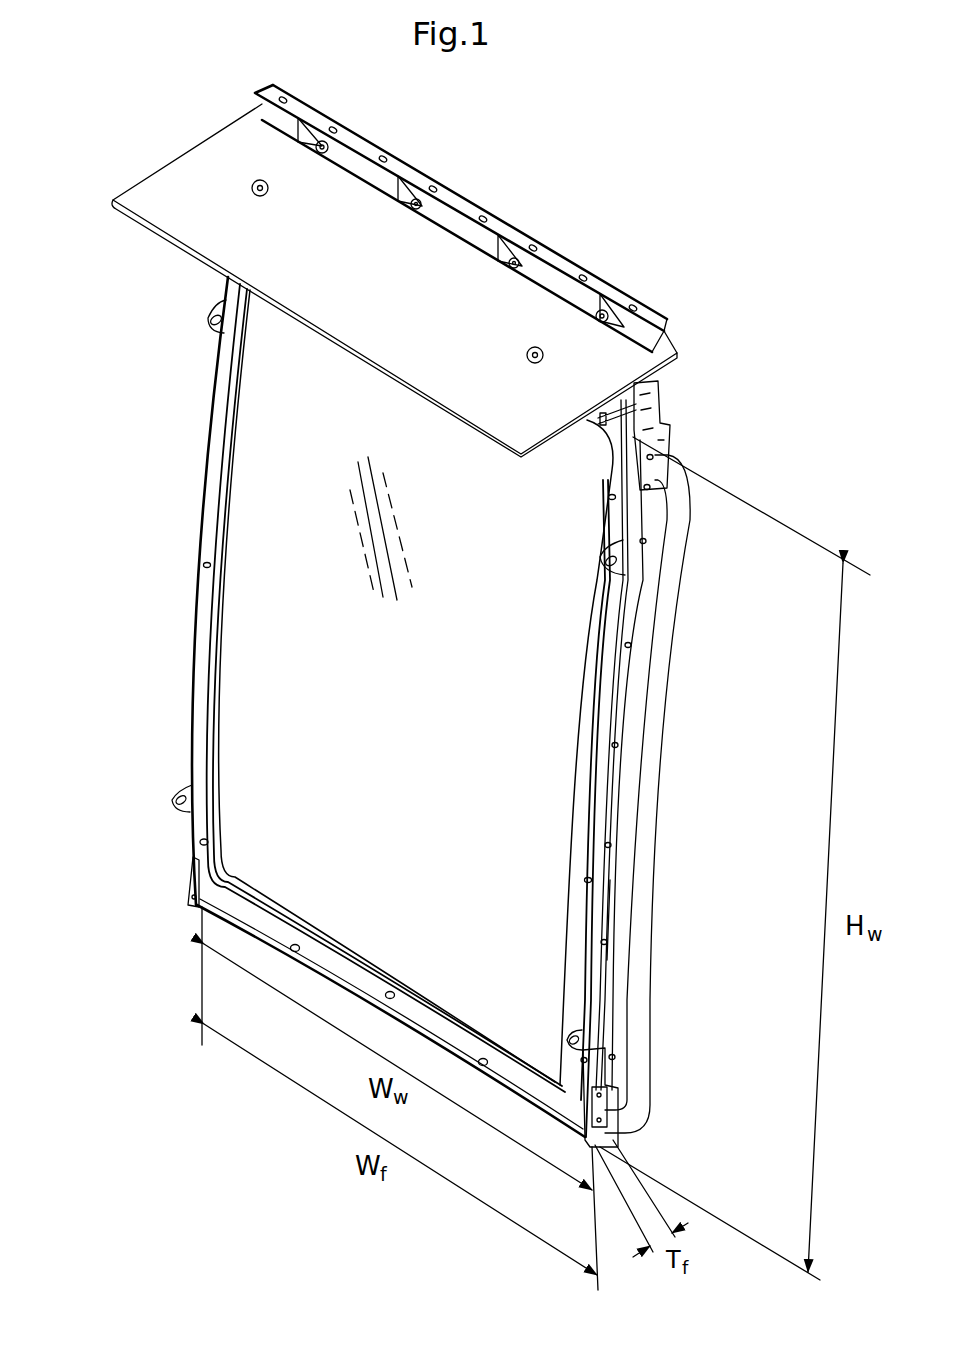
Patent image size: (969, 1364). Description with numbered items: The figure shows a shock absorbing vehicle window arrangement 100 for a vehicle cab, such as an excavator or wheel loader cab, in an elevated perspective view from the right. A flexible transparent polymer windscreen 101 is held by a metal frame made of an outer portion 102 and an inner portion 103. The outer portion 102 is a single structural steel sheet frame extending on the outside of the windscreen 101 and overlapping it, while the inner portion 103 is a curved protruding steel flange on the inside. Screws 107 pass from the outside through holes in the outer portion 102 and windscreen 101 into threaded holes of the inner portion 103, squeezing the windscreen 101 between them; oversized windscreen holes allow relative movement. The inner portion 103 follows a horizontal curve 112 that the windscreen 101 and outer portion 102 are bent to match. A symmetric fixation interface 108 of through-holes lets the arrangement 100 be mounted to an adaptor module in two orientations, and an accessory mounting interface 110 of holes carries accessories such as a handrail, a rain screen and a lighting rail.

The shock absorbing vehicle window arrangement 100 is at (707, 274).
The transparent polymer windscreen 101 is at (337, 540).
The outer portion 102 is at (572, 905).
The inner portion 103 is at (610, 803).
The screws 107 is at (222, 905).
The fixation interface 108 is at (645, 542).
The accessory mounting interface 110 is at (650, 487).
The curve 112 is at (611, 913).